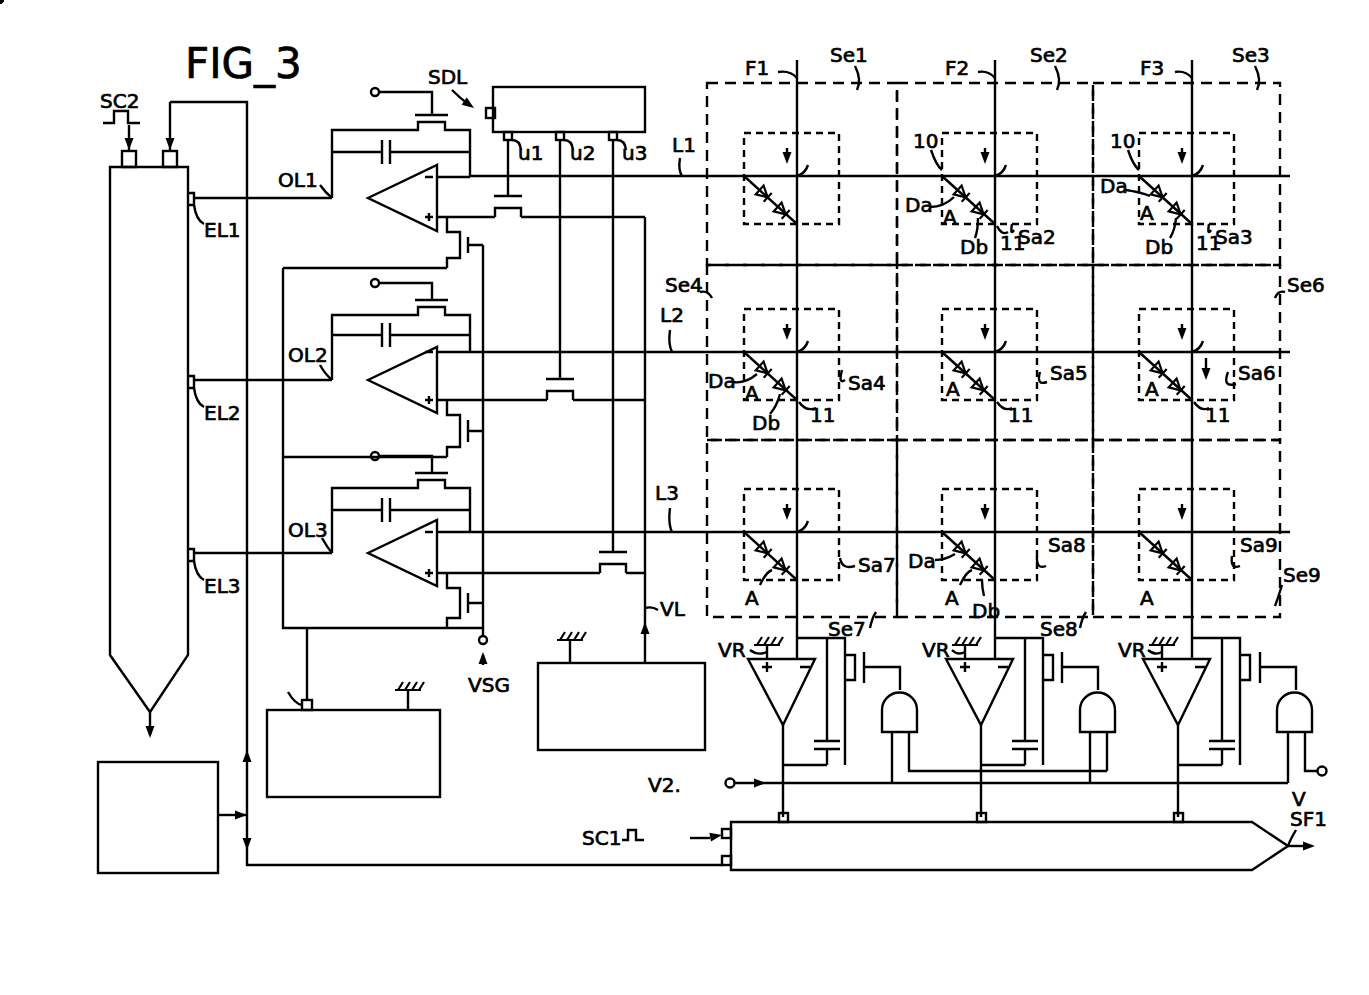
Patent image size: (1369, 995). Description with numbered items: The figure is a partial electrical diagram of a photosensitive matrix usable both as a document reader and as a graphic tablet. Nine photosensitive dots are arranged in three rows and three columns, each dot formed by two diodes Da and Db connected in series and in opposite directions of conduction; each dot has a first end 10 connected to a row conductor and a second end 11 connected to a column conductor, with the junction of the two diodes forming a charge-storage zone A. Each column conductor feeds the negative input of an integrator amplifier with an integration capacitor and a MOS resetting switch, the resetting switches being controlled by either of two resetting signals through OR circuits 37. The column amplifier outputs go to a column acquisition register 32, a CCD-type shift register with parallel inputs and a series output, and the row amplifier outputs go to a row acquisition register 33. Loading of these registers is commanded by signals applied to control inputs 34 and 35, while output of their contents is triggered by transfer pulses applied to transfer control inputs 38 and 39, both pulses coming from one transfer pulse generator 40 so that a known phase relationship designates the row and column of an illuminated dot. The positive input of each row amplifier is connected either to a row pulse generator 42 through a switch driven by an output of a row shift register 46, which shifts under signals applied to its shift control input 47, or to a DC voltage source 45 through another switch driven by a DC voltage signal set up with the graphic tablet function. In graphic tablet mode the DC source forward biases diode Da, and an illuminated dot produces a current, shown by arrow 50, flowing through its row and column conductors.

The first end 10 is at (744, 170).
The second end 11 is at (799, 226).
The column acquisition register 32 is at (915, 822).
The row acquisition register 33 is at (110, 638).
The control input 34 is at (722, 831).
The control input 35 is at (122, 157).
The OR circuit 37 is at (917, 710).
The transfer control input 38 is at (722, 860).
The transfer control input 39 is at (177, 156).
The transfer pulse generator 40 is at (184, 762).
The row pulse generator 42 is at (590, 750).
The DC voltage source 45 is at (340, 797).
The row shift register 46 is at (645, 110).
The shift control input 47 is at (486, 108).
The current arrow 50 is at (1180, 356).